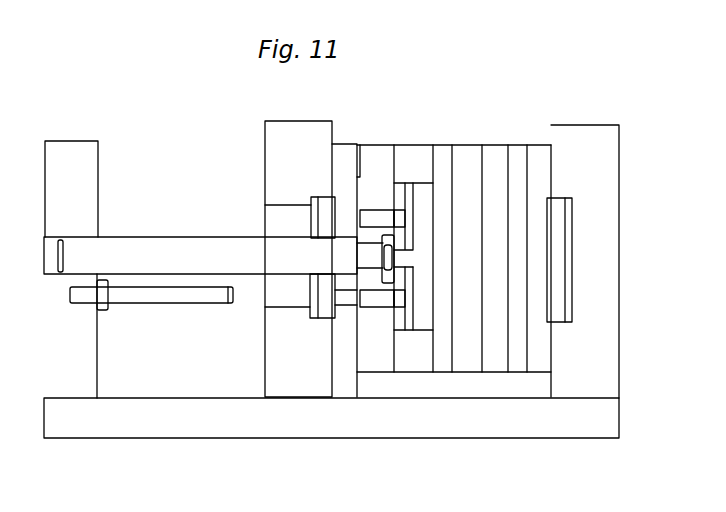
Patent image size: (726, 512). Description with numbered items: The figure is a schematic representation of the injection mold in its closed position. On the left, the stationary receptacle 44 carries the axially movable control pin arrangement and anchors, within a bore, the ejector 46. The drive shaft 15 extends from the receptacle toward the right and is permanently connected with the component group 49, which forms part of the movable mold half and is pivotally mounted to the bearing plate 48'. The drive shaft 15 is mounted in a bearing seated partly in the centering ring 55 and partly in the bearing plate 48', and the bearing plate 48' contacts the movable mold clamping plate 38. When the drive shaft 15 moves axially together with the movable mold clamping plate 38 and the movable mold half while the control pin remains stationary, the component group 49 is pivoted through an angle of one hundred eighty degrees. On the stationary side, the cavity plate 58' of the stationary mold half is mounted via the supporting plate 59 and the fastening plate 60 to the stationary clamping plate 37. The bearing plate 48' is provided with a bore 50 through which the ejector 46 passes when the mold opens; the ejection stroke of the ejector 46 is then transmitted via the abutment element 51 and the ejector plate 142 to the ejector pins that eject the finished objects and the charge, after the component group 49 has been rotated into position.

The stationary receptacle 44 is at (65, 198).
The drive shaft 15 is at (196, 250).
The ejector 46 is at (165, 290).
The movable mold clamping plate 38 is at (298, 158).
The centering ring 55 is at (318, 212).
The bearing plate 48' is at (351, 245).
The bore 50 is at (345, 300).
The abutment element 51 is at (378, 300).
The component group 49 is at (470, 188).
The ejector plate 142 is at (410, 318).
The cavity plate 58' is at (490, 231).
The supporting plate 59 is at (515, 160).
The fastening plate 60 is at (535, 160).
The stationary clamping plate 37 is at (578, 148).